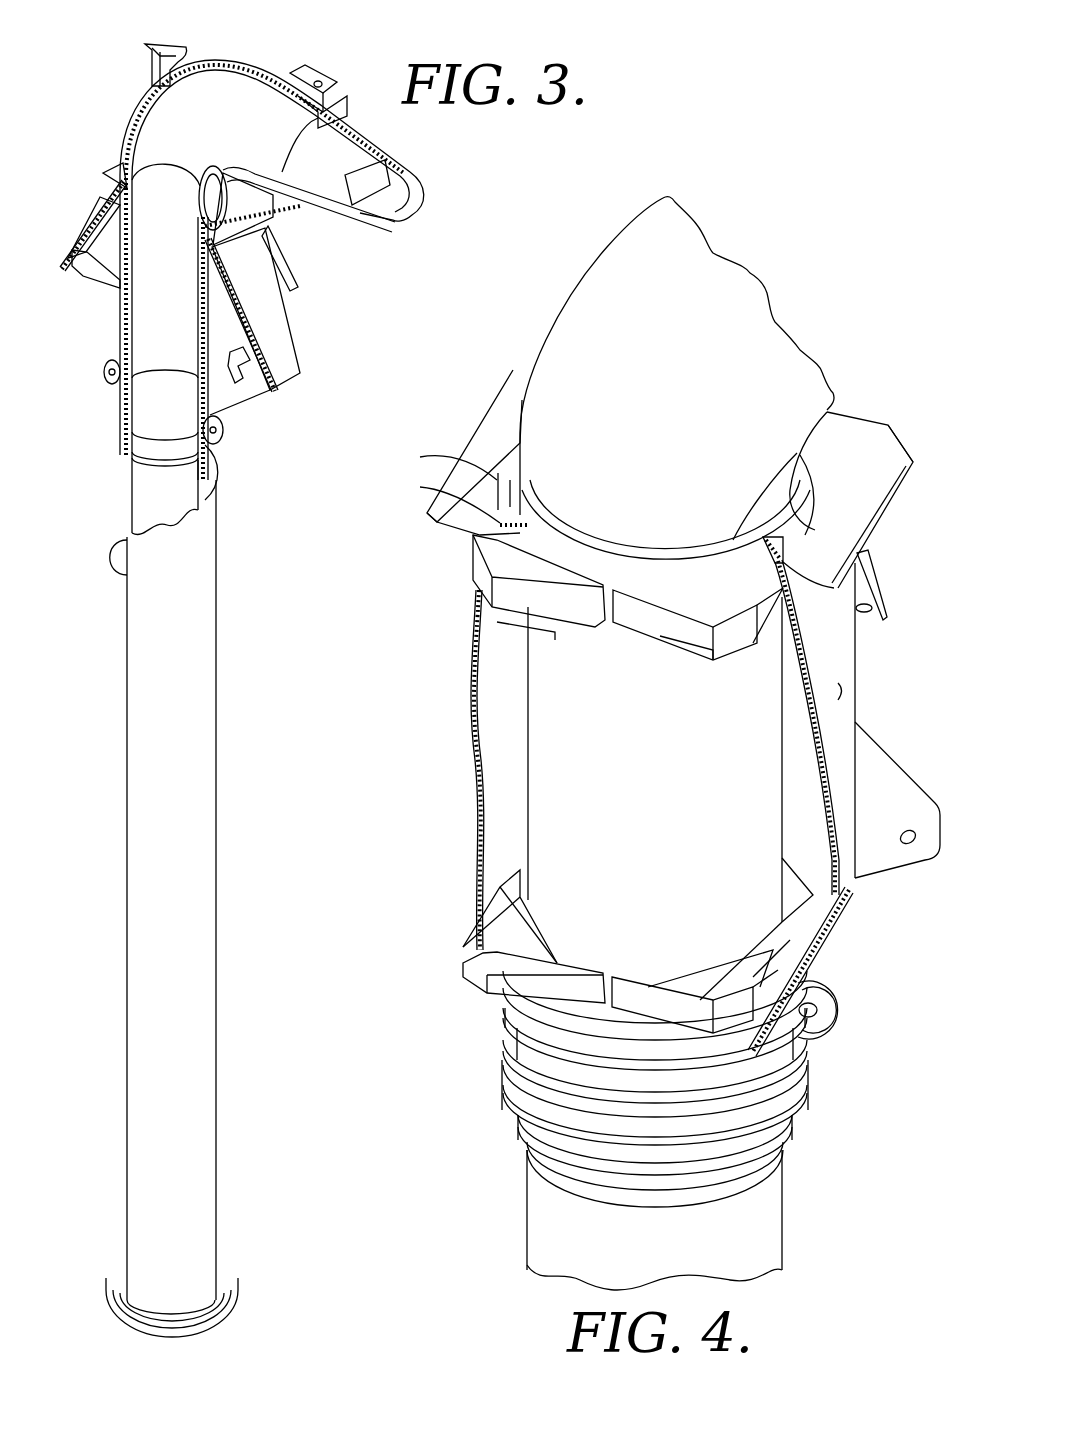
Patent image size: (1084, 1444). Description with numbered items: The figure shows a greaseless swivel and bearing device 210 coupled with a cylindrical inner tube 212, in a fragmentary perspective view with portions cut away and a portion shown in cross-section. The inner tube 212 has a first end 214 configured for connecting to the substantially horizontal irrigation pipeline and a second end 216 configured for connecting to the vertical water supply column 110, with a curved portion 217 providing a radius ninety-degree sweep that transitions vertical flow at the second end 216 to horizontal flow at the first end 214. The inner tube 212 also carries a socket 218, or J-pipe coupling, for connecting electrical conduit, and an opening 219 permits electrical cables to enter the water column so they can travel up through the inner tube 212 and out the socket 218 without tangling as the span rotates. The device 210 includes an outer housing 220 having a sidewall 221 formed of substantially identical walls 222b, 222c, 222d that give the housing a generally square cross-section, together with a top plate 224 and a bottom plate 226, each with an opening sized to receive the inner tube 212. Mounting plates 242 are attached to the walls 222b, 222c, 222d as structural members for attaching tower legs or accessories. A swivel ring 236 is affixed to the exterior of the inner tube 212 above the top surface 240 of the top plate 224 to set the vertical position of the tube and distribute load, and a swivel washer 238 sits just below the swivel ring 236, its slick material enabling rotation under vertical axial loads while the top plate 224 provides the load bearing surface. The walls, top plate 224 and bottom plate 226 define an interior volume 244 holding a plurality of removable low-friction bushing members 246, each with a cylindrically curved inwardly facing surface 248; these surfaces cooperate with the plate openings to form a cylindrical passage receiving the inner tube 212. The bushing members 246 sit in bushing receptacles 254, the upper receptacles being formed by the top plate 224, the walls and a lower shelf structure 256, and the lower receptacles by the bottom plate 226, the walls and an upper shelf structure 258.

In FIG. 3, the vertical water supply column 110 is at (193, 643).
In FIG. 4, the vertical water supply column 110 is at (767, 1210).
In FIG. 4, the greaseless swivel and bearing device 210 is at (862, 662).
In FIG. 3, the cylindrical inner tube 212 is at (125, 335).
In FIG. 4, the cylindrical inner tube 212 is at (630, 752).
In FIG. 3, the first end 214 is at (405, 152).
In FIG. 3, the second end 216 is at (128, 430).
In FIG. 4, the second end 216 is at (600, 1073).
In FIG. 3, the curved portion 217 is at (128, 112).
In FIG. 4, the curved portion 217 is at (570, 317).
In FIG. 3, the socket 218 is at (178, 40).
In FIG. 3, the opening 219 is at (165, 46).
In FIG. 4, the outer housing 220 is at (858, 722).
In FIG. 3, the sidewall 221 is at (232, 420).
In FIG. 4, the sidewall 221 is at (478, 700).
In FIG. 3, the wall 222b is at (242, 397).
In FIG. 4, the wall 222b is at (838, 683).
In FIG. 4, the wall 222c is at (857, 650).
In FIG. 3, the wall 222d is at (120, 290).
In FIG. 4, the wall 222d is at (478, 830).
In FIG. 4, the top plate 224 is at (893, 442).
In FIG. 4, the bottom plate 226 is at (740, 1035).
In FIG. 3, the swivel ring 236 is at (275, 212).
In FIG. 4, the swivel ring 236 is at (500, 478).
In FIG. 3, the swivel washer 238 is at (294, 250).
In FIG. 4, the swivel washer 238 is at (470, 505).
In FIG. 4, the top surface 240 is at (833, 472).
In FIG. 3, the mounting plates 242 is at (80, 235).
In FIG. 4, the mounting plates 242 is at (875, 575).
In FIG. 4, the interior volume 244 is at (500, 748).
In FIG. 4, the bushing members 246 is at (497, 558).
In FIG. 4, the inwardly facing surface 248 is at (557, 550).
In FIG. 4, the bushing receptacles 254 is at (487, 585).
In FIG. 4, the lower shelf structure 256 is at (518, 613).
In FIG. 4, the upper shelf structure 258 is at (800, 848).